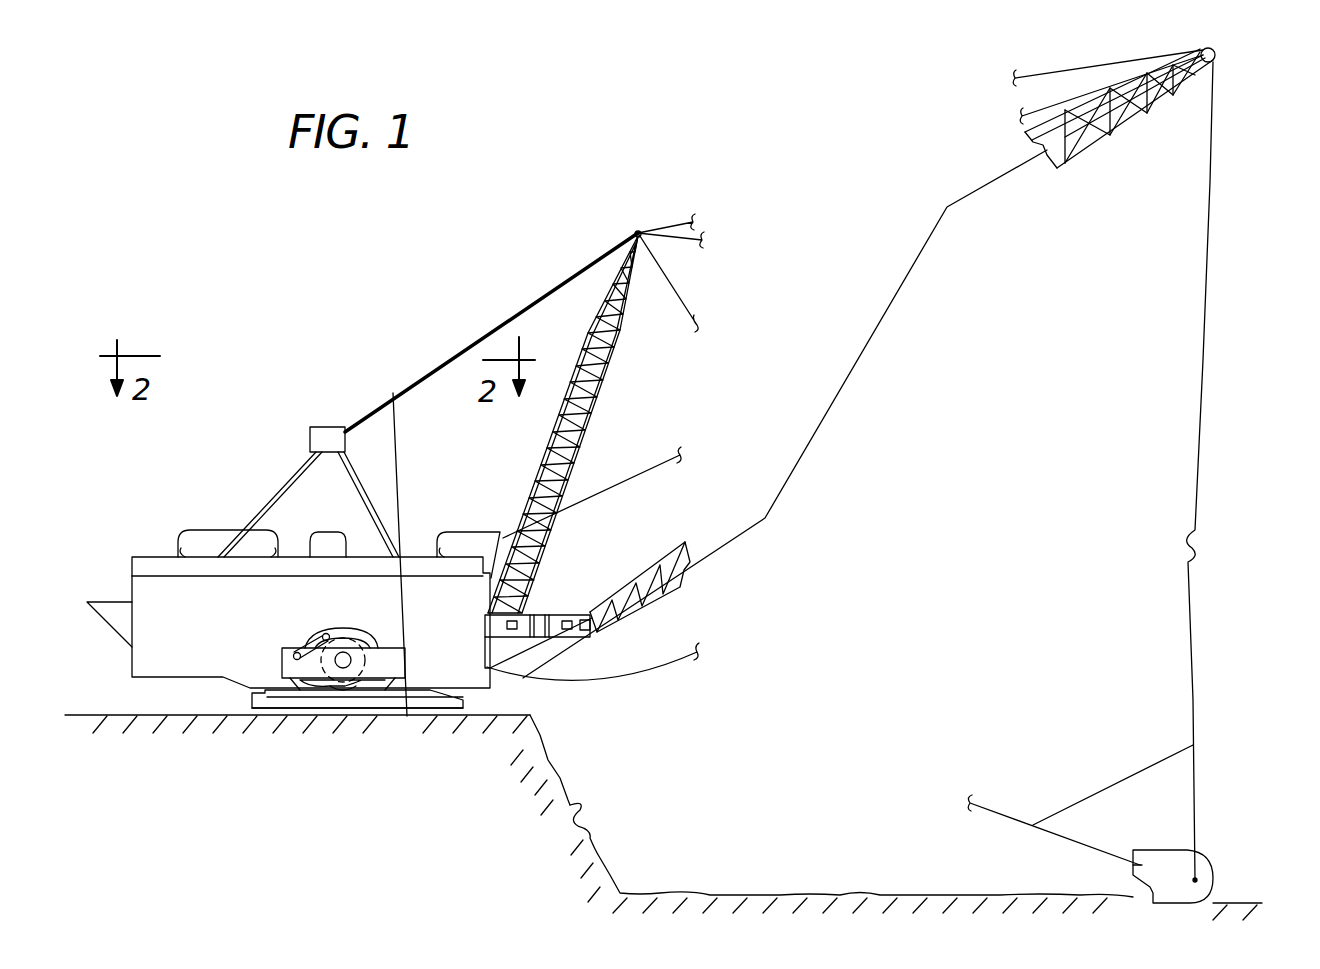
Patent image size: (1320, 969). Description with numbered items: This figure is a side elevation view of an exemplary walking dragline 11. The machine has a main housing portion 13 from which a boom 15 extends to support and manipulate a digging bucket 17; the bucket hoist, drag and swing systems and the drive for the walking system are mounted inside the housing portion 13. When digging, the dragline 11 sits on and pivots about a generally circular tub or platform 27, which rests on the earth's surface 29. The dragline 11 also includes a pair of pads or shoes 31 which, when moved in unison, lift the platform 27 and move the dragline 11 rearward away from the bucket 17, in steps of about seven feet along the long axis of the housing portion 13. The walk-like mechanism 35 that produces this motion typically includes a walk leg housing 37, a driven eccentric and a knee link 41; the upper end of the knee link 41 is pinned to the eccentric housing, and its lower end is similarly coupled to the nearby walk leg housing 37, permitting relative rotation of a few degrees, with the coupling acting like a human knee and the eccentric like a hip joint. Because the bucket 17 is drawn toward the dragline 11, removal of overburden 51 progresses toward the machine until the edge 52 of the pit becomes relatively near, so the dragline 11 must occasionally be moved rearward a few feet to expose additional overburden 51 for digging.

The walking dragline 11 is at (271, 430).
The main housing portion 13 is at (148, 590).
The boom 15 is at (660, 555).
The digging bucket 17 is at (1205, 863).
The tub 27 is at (470, 706).
The earth's surface 29 is at (118, 713).
The pads 31 is at (265, 700).
The walk-like mechanism 35 is at (270, 626).
The walk leg housing 37 is at (285, 660).
The knee link 41 is at (312, 640).
The overburden 51 is at (568, 783).
The edge of the pit 52 is at (535, 720).